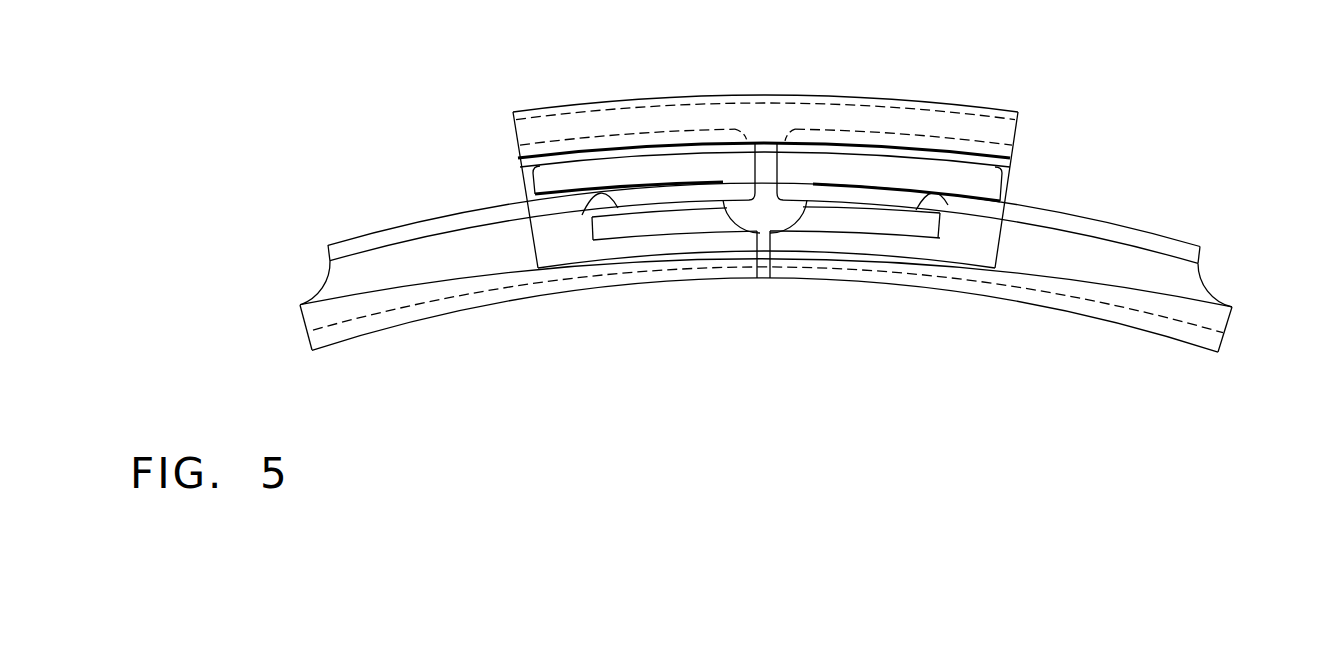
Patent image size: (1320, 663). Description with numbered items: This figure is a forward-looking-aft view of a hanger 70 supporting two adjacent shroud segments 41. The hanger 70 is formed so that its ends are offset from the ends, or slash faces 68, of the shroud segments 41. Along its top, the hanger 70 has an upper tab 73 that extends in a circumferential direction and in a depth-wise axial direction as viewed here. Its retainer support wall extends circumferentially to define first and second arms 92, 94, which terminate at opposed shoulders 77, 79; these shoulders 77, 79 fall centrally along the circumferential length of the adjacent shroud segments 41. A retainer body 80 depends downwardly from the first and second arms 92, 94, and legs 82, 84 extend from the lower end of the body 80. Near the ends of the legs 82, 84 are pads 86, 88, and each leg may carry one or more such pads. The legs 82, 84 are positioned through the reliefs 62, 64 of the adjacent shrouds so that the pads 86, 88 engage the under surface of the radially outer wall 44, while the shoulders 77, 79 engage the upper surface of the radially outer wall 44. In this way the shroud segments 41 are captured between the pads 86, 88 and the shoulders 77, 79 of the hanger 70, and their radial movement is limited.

The shroud segment 41 is at (756, 252).
The radially outer wall 44 is at (764, 176).
The relief 62 is at (652, 190).
The relief 64 is at (883, 216).
The slash face 68 is at (302, 322).
The hanger 70 is at (830, 171).
The upper tab 73 is at (752, 93).
The shoulder 77 is at (530, 187).
The shoulder 79 is at (1000, 186).
The retainer body 80 is at (811, 166).
The leg 82 is at (637, 227).
The leg 84 is at (883, 228).
The pad 86 is at (582, 214).
The pad 88 is at (948, 205).
The first arm 92 is at (630, 125).
The second arm 94 is at (903, 130).